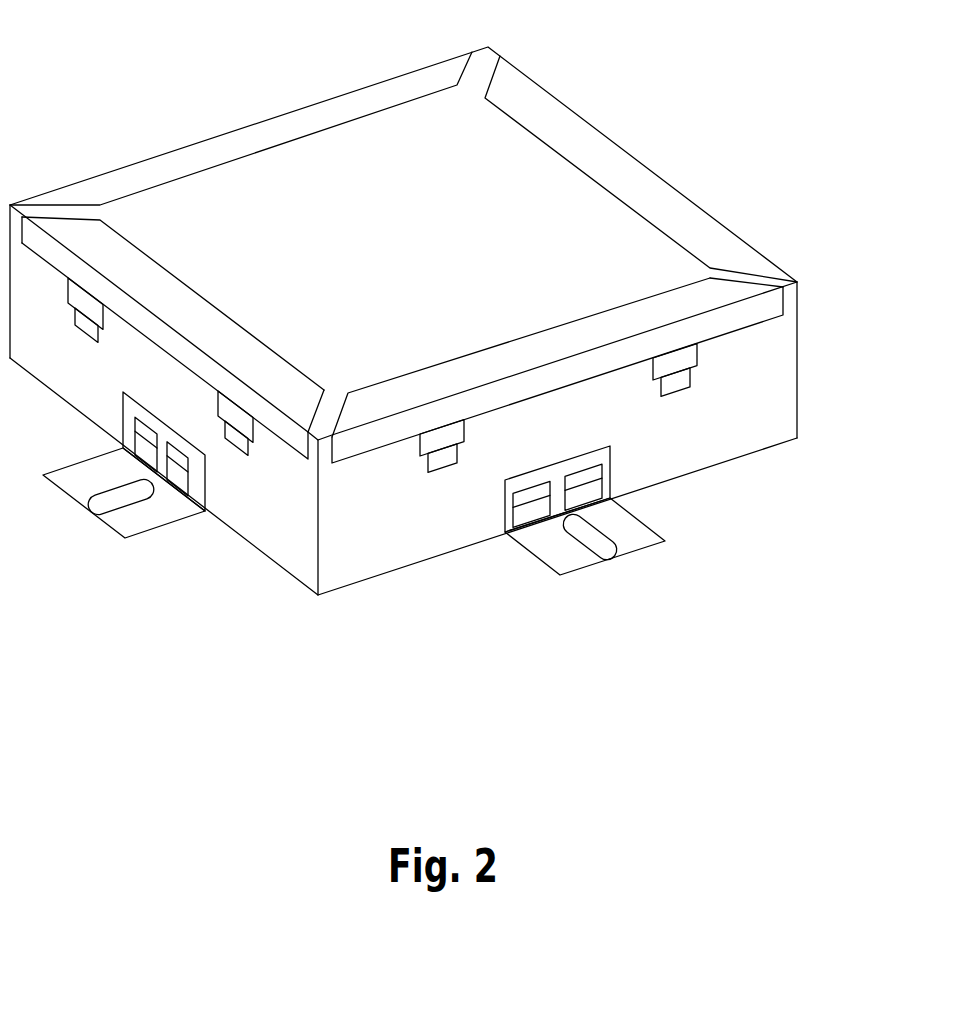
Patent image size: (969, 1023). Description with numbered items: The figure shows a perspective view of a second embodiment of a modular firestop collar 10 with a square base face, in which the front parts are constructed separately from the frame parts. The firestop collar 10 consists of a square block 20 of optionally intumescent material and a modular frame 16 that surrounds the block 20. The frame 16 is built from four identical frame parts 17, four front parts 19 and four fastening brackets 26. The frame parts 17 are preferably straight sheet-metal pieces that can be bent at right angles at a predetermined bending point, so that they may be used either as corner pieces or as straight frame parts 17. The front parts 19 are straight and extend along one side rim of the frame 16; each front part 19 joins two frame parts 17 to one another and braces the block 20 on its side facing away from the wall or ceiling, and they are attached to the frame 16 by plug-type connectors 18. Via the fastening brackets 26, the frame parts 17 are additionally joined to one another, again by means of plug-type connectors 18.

The firestop collar 10 is at (220, 90).
The block of optionally intumescent material 20 is at (553, 190).
The front part 19 is at (672, 308).
The frame part 17 is at (730, 397).
The frame 16 is at (430, 580).
The plug-type connector 18 is at (611, 470).
The fastening bracket 26 is at (623, 528).